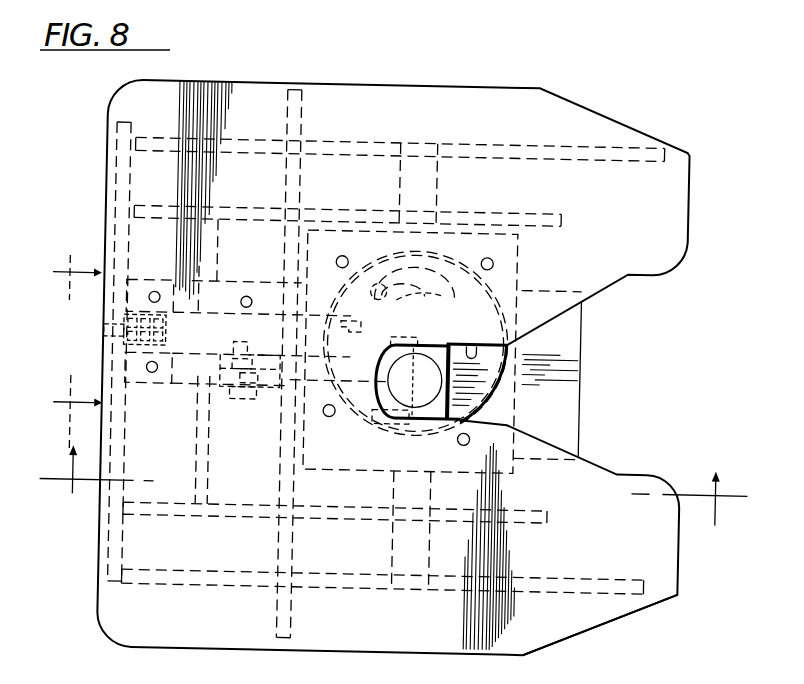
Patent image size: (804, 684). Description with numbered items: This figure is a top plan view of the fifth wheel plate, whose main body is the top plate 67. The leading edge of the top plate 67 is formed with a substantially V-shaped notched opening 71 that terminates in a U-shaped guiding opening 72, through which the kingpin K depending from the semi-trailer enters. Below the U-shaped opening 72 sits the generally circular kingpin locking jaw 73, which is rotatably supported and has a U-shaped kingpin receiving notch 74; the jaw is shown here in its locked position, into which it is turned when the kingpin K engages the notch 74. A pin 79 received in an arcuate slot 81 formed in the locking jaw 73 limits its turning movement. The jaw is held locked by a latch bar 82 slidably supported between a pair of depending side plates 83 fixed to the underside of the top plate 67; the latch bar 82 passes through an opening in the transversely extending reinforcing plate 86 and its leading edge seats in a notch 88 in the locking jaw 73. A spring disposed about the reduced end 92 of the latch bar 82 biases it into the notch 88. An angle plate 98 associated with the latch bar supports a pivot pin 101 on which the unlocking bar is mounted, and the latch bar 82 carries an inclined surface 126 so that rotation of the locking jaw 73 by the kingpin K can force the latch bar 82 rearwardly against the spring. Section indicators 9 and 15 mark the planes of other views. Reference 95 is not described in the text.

The top plate 67 is at (583, 621).
The V-shaped notched opening 71 is at (595, 463).
The U-shaped guiding opening 72 is at (472, 342).
The kingpin locking jaw 73 is at (474, 401).
The U-shaped kingpin receiving notch 74 is at (437, 410).
The pin 79 is at (372, 302).
The arcuate slot 81 is at (428, 283).
The latch bar 82 is at (210, 333).
The side plates 83 is at (172, 288).
The reinforcing plate 86 is at (286, 652).
The notch 88 is at (348, 282).
The reduced end 92 is at (104, 336).
The frame bar 95 is at (119, 204).
The angle plate 98 is at (258, 402).
The pivot pin 101 is at (244, 402).
The inclined surface 126 is at (349, 331).
The kingpin K is at (423, 371).
The section line 9- 9 is at (393, 485).
The section line 15- 15 is at (70, 349).